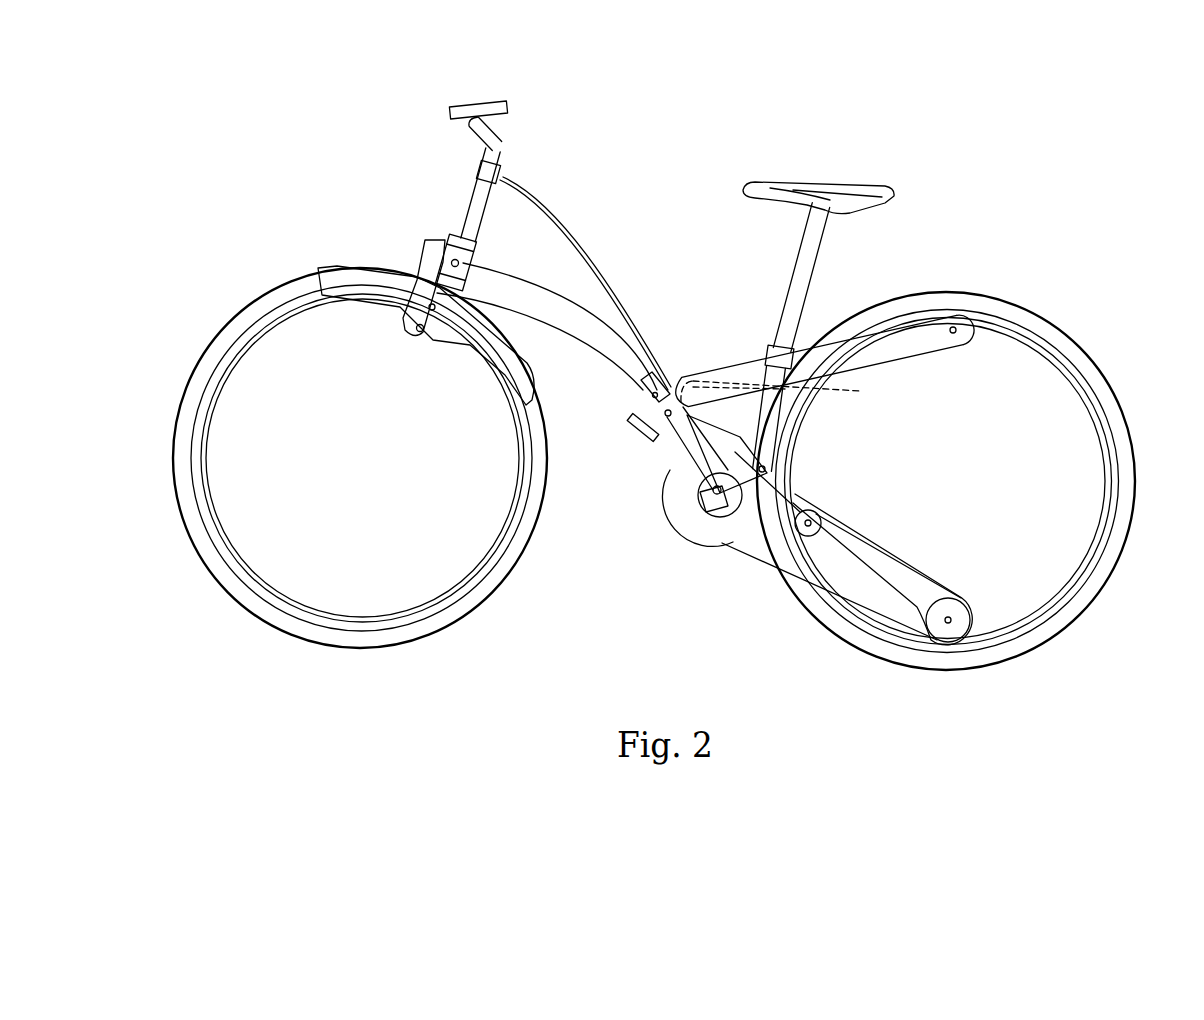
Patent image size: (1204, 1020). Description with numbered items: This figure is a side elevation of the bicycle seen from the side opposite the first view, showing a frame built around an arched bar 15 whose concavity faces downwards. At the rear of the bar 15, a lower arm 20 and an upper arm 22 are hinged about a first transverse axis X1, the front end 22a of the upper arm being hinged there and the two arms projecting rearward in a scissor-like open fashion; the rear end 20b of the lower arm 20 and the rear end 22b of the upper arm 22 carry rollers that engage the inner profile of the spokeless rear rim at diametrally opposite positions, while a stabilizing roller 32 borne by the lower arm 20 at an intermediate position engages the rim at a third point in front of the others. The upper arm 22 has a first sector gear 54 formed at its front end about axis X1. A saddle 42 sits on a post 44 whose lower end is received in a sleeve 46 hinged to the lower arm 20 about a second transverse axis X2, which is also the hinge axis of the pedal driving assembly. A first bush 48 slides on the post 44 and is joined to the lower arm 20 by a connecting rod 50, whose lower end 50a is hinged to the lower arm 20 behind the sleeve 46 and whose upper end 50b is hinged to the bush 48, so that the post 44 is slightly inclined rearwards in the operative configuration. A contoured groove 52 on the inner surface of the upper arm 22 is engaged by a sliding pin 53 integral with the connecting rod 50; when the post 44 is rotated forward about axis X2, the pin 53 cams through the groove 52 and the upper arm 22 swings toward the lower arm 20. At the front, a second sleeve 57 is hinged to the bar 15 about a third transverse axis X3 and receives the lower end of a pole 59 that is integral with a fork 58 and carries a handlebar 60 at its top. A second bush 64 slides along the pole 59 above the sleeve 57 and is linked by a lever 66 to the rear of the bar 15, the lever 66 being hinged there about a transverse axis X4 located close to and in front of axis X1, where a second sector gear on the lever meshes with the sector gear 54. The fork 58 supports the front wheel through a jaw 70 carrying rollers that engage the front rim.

The bar 15 is at (558, 305).
The lower arm 20 is at (891, 610).
The rear end of lower arm 20b is at (920, 617).
The upper arm 22 is at (839, 318).
The front end of upper arm 22a is at (677, 452).
The rear end of upper arm 22b is at (960, 318).
The stabilizing roller 32 is at (820, 543).
The saddle 42 is at (790, 185).
The post 44 is at (800, 263).
The sleeve 46 is at (692, 545).
The first bush 48 is at (767, 358).
The connecting rod 50 is at (818, 382).
The lower end of connecting rod 50a is at (773, 463).
The upper end of connecting rod 50b is at (805, 337).
The contoured groove 52 is at (781, 361).
The sliding pin 53 is at (847, 383).
The first sector gear 54 is at (653, 410).
The second sleeve 57 is at (460, 252).
The fork 58 is at (423, 241).
The pole 59 is at (472, 217).
The handlebar 60 is at (473, 125).
The second bush 64 is at (485, 178).
The lever 66 is at (566, 235).
The jaw 70 is at (462, 340).
The first transverse axis X1 is at (648, 412).
The second transverse axis X2 is at (687, 527).
The third transverse axis X3 is at (463, 270).
The transverse axis X4 is at (660, 337).